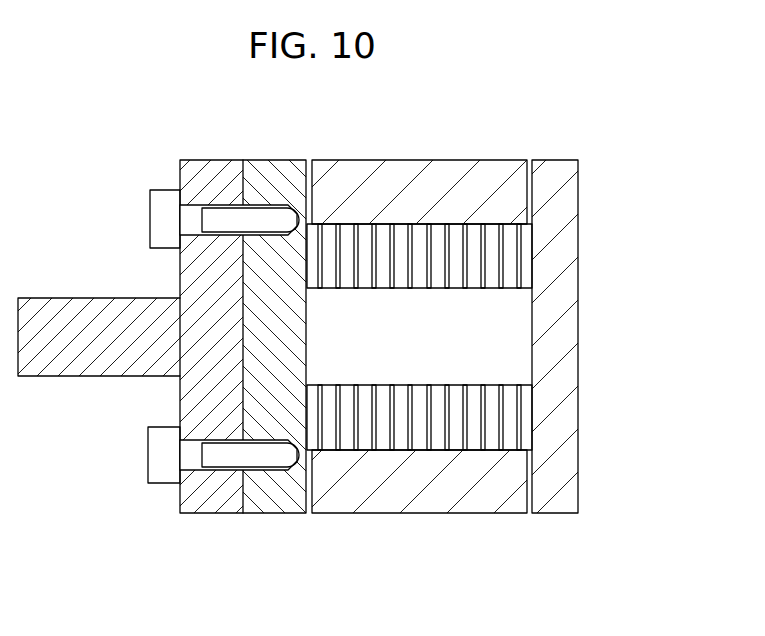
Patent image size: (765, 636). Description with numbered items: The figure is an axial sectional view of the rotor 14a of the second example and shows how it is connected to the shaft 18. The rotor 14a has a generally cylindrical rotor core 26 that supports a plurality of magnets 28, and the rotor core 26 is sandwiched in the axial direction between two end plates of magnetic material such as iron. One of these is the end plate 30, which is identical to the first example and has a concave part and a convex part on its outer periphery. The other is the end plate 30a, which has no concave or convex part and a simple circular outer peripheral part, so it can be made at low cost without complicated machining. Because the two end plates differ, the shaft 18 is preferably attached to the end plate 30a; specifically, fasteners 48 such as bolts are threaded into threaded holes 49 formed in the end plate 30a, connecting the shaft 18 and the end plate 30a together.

The rotor 14a is at (240, 140).
The shaft 18 is at (50, 318).
The rotor core 26 is at (508, 258).
The magnets 28 is at (447, 170).
The end plate 30 is at (560, 443).
The end plate 30a is at (290, 498).
The fasteners 48 is at (158, 460).
The threaded holes 49 is at (263, 472).